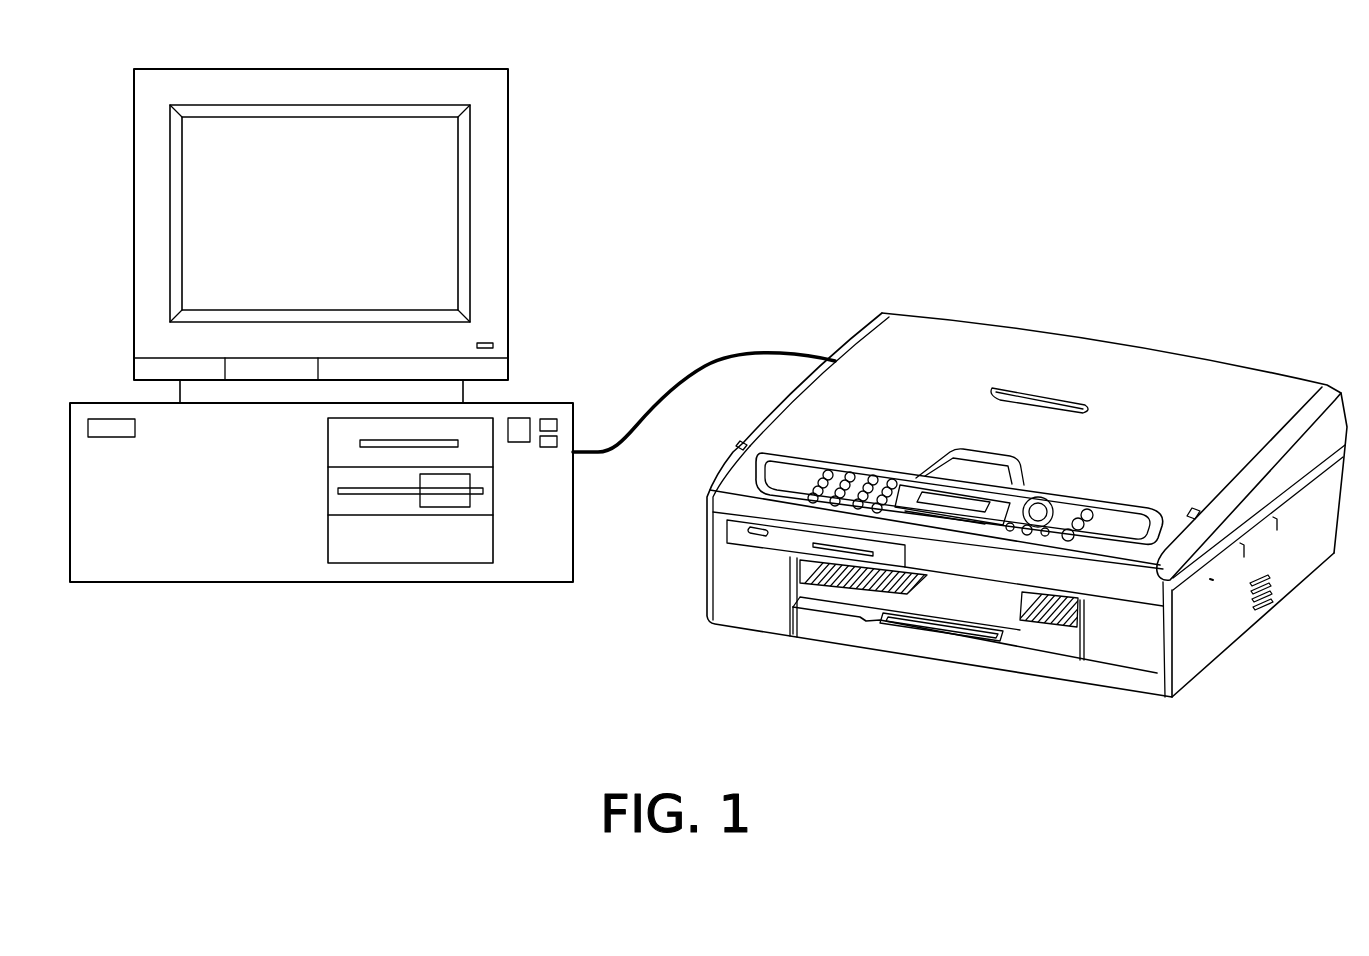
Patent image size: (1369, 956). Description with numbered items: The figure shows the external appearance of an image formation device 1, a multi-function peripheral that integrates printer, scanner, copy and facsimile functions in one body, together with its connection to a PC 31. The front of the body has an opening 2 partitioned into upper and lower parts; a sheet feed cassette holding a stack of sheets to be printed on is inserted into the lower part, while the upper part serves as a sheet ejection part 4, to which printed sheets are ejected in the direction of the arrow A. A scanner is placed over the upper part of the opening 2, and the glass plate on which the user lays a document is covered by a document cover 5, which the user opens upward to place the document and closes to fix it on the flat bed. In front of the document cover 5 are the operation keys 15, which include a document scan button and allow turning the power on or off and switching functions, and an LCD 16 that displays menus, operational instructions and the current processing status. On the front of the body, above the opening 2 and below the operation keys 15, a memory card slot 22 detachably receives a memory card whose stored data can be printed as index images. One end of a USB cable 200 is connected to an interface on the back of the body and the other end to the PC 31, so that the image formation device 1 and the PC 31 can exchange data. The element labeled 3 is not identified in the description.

The image formation device 1 is at (1003, 507).
The opening 2 is at (1075, 652).
The paper discharge tray 3 is at (858, 630).
The sheet ejection part 4 is at (825, 598).
The document cover 5 is at (958, 350).
The operation keys 15 is at (911, 481).
The LCD 16 is at (998, 503).
The memory card slot 22 is at (749, 548).
The PC 31 is at (655, 200).
The USB cable 200 is at (656, 391).
The arrow A is at (925, 663).